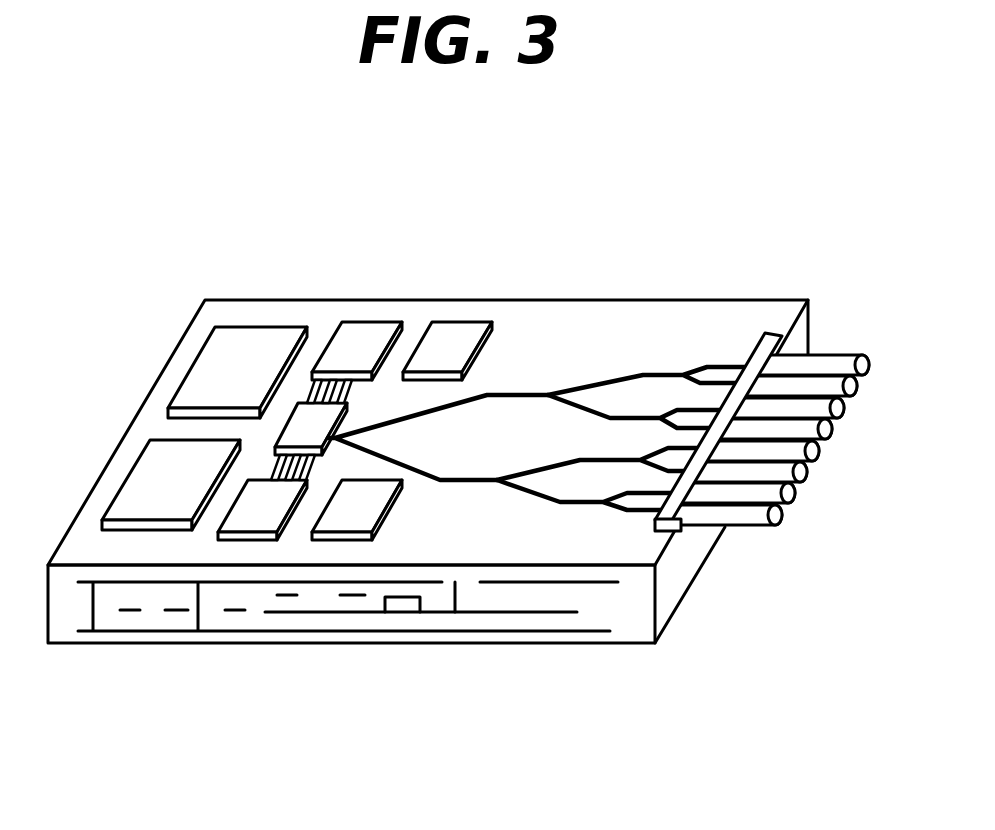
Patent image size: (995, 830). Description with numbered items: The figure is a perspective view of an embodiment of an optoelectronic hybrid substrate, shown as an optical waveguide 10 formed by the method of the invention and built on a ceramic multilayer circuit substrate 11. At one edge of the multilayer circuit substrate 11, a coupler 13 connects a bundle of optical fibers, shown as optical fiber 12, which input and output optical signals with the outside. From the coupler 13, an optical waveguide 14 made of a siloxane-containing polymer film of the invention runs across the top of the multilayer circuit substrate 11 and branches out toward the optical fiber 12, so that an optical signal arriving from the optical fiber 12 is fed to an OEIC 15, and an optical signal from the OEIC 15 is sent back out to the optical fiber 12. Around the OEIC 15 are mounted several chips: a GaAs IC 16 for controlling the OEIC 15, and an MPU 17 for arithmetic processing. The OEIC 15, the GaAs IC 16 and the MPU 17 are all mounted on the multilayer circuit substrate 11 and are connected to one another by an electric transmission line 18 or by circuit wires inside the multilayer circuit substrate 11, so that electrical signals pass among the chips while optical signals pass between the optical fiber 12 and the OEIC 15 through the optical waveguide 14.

The optical waveguide 10 is at (489, 216).
The ceramic multilayer circuit substrate 11 is at (615, 617).
The optical fiber 12 is at (748, 517).
The coupler 13 is at (776, 335).
The optical waveguide 14 is at (598, 380).
The OEIC 15 is at (302, 424).
The GaAs IC 16 is at (368, 333).
The MPU 17 is at (217, 357).
The electric transmission line 18 is at (273, 467).